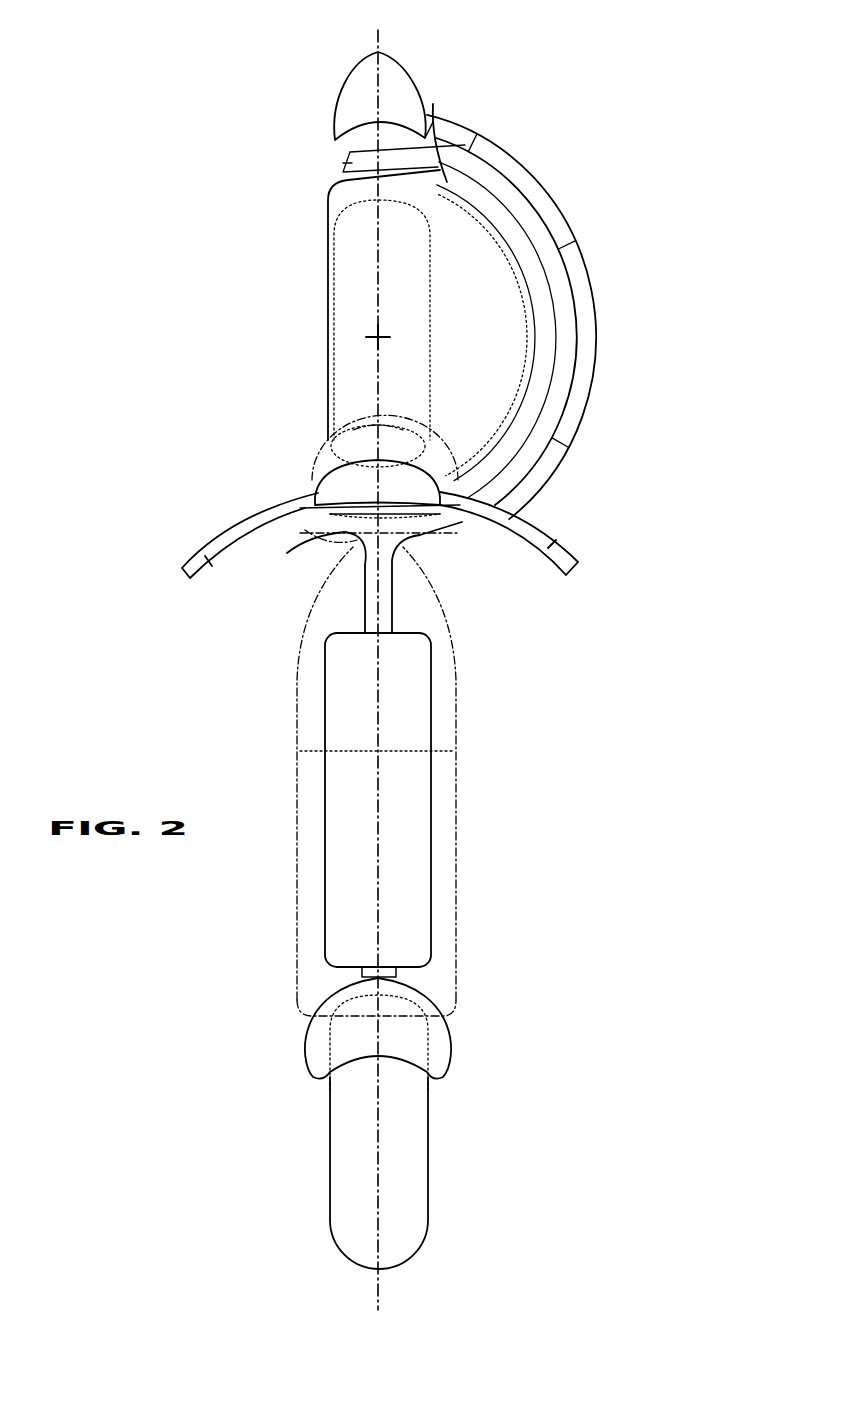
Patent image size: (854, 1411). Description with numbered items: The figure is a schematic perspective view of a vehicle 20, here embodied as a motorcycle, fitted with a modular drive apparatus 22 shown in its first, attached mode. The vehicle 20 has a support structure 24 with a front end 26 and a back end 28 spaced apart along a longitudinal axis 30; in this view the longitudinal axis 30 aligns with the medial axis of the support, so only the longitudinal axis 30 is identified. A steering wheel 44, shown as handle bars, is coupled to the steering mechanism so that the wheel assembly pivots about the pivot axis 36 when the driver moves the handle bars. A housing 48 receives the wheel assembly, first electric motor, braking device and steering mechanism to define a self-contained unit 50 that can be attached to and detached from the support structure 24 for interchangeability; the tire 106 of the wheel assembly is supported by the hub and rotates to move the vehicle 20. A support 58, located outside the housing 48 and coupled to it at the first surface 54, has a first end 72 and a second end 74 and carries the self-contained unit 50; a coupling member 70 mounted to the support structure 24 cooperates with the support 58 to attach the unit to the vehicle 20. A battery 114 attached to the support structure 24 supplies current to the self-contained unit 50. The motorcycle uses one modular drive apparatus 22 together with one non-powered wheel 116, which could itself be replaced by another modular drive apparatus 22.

The vehicle 20 is at (586, 96).
The modular drive apparatus 22 is at (270, 300).
The support structure 24 is at (598, 352).
The front end 26 is at (418, 62).
The back end 28 is at (453, 1208).
The longitudinal axis 30 is at (376, 50).
The pivot axis 36 is at (384, 332).
The steering wheel 44 is at (546, 530).
The housing 48 is at (331, 205).
The self-contained unit 50 is at (300, 366).
The first surface 54 is at (500, 325).
The support 58 is at (438, 130).
The coupling member 70 is at (520, 196).
The first end 72 is at (352, 163).
The second end 74 is at (333, 535).
The tire 106 is at (428, 235).
The battery 114 is at (433, 662).
The non-powered wheel 116 is at (410, 1128).